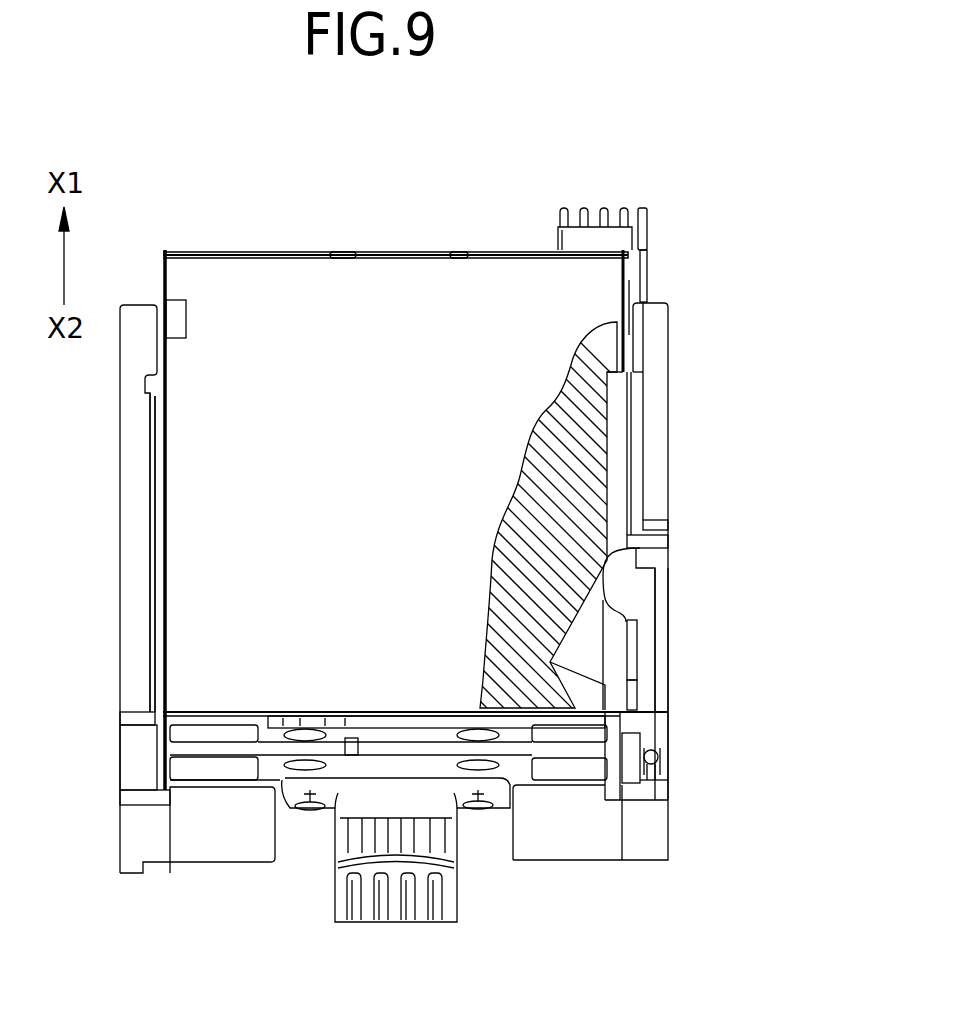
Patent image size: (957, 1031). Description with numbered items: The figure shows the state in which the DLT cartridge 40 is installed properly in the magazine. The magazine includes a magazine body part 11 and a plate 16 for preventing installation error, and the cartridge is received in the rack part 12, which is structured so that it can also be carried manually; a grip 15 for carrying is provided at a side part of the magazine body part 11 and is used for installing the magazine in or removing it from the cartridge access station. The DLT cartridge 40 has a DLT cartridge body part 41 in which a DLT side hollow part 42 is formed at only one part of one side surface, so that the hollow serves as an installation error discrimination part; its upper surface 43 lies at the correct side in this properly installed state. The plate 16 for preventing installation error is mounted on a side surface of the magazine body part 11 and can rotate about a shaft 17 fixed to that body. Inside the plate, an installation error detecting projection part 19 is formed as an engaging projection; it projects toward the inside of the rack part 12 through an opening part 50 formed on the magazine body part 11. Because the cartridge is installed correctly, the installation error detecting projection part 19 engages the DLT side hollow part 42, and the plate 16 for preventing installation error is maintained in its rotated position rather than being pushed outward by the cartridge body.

The magazine body part 11 is at (668, 447).
The rack part 12 is at (177, 463).
The grip for carrying 15 is at (448, 900).
The plate for preventing installation error 16 is at (670, 632).
The shaft 17 is at (660, 758).
The installation error detecting projection part 19 is at (627, 585).
The DLT cartridge 40 is at (572, 317).
The DLT cartridge body part 41 is at (210, 648).
The DLT side hollow part 42 is at (600, 655).
The upper surface 43 is at (193, 543).
The opening part 50 is at (658, 553).